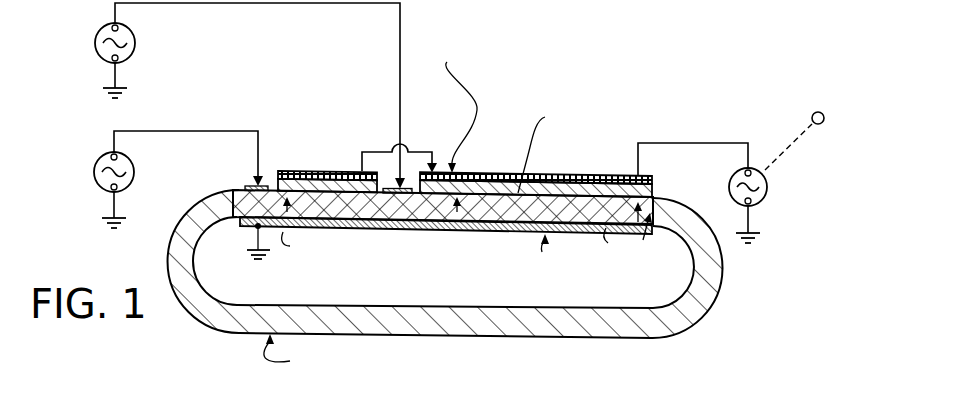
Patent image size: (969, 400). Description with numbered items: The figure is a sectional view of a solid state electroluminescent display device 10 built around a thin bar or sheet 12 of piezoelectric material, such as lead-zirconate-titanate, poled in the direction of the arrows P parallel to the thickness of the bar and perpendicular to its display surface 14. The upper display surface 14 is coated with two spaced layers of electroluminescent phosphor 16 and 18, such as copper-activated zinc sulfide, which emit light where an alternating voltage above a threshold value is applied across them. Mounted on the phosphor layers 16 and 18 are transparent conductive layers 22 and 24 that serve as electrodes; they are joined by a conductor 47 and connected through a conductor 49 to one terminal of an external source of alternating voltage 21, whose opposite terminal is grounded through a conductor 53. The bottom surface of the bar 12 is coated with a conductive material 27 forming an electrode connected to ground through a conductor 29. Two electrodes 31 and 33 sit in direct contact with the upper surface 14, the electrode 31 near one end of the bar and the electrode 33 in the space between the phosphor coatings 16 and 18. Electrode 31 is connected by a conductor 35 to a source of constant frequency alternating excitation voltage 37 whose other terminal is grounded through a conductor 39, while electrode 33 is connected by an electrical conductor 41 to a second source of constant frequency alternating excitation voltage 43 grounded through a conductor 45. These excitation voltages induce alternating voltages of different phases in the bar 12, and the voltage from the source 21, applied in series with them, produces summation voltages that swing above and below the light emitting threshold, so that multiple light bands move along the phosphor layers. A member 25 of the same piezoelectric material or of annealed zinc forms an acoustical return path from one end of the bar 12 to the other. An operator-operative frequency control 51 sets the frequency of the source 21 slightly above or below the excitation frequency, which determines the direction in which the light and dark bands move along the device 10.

The solid state electroluminescent display device 10 is at (742, 26).
The bar or sheet 12 is at (485, 230).
The display surface 14 is at (480, 222).
The electroluminescent phosphor layer 16 is at (350, 172).
The electroluminescent phosphor layer 18 is at (576, 171).
The source of alternating voltage 21 is at (727, 181).
The transparent conductive layer 22 is at (305, 146).
The transparent conductive layer 24 is at (522, 152).
The acoustical return path member 25 is at (316, 300).
The conductive material 27 is at (620, 244).
The conductor 29 is at (256, 245).
The electrode 31 is at (249, 177).
The electrode 33 is at (382, 166).
The conductor 35 is at (133, 133).
The source of constant frequency alternating excitation voltage 37 is at (91, 160).
The conductor 39 is at (112, 204).
The electrical conductor 41 is at (404, 28).
The source of constant frequency alternating excitation voltage 43 is at (94, 32).
The conductor 45 is at (113, 67).
The conductor 47 is at (440, 134).
The conductor 49 is at (745, 125).
The frequency control 51 is at (824, 124).
The conductor 53 is at (752, 218).